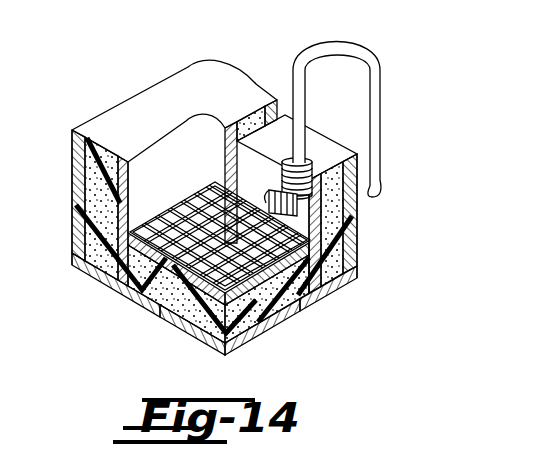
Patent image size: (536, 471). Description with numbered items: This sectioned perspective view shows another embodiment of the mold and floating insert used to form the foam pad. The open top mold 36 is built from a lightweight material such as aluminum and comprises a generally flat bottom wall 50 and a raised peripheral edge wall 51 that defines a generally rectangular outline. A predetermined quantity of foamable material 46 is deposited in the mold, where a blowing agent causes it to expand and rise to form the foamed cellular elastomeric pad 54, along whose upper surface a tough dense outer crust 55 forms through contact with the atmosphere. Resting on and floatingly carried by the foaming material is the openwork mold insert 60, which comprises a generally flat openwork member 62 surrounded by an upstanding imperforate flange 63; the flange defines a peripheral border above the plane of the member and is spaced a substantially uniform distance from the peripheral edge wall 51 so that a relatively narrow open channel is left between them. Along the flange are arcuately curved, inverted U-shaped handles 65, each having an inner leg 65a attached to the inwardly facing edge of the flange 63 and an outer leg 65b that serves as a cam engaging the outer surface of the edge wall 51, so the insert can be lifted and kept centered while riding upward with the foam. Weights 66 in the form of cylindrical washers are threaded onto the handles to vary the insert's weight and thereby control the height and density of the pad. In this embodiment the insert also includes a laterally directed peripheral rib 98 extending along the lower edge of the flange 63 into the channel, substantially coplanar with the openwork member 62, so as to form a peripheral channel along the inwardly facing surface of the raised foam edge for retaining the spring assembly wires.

The open top mold 36 is at (375, 287).
The foamable material 46 is at (130, 294).
The bottom wall 50 is at (322, 303).
The peripheral edge wall 51 is at (358, 202).
The foamed cellular elastomeric pad 54 is at (74, 231).
The dense outer crust 55 is at (260, 334).
The openwork mold insert 60 is at (156, 112).
The openwork member 62 is at (178, 324).
The upstanding imperforate flange 63 is at (131, 186).
The handles 65 is at (358, 14).
The inner leg 65a is at (306, 113).
The outer leg 65b is at (380, 143).
The weights 66 is at (312, 165).
The laterally directed peripheral rib 98 is at (113, 212).